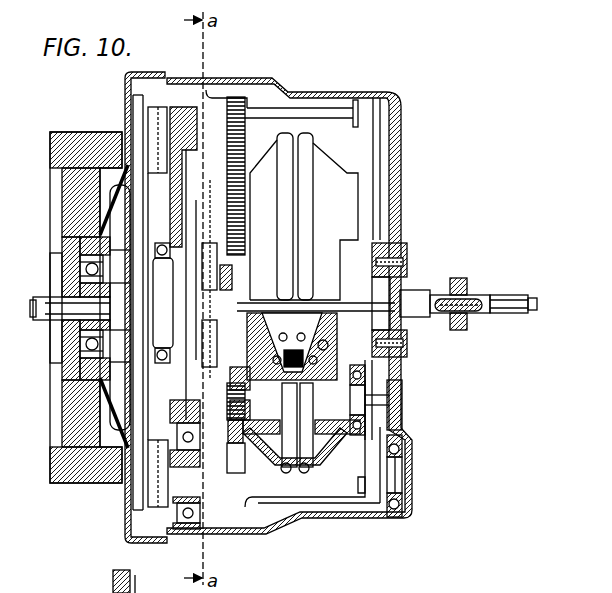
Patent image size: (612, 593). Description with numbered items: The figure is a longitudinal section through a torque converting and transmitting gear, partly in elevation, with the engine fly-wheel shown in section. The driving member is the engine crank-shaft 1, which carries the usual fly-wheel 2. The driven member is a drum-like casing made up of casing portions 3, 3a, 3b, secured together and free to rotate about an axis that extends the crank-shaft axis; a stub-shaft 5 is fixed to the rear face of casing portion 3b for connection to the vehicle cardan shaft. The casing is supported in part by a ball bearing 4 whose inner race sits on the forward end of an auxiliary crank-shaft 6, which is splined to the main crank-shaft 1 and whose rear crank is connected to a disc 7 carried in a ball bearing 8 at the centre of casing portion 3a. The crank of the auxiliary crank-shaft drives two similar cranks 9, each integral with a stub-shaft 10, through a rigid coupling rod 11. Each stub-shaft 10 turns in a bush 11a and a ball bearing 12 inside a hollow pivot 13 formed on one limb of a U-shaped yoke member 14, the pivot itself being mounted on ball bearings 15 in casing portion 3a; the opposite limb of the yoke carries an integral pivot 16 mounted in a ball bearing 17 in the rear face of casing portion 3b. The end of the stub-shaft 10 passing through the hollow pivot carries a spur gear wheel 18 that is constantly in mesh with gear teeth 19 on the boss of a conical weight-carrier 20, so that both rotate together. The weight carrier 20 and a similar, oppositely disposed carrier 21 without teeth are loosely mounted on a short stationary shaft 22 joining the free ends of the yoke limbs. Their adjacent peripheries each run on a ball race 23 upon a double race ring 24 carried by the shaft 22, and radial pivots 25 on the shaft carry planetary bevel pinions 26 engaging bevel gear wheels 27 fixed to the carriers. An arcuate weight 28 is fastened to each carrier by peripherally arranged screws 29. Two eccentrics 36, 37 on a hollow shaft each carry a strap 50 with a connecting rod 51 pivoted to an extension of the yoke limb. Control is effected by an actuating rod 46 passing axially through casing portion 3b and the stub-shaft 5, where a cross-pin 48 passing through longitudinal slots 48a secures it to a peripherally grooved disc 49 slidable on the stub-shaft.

The engine crank-shaft 1 is at (33, 306).
The fly-wheel 2 is at (62, 132).
The casing portion 3 is at (125, 80).
The casing portion 3a is at (178, 76).
The casing portion 3b is at (366, 90).
The ball bearing 4 is at (90, 268).
The stub-shaft 5 is at (436, 322).
The auxiliary crank-shaft 6 is at (72, 325).
The disc 7 is at (100, 393).
The ball bearing 8 is at (157, 247).
The crank 9 is at (128, 100).
The stub-shaft 10 is at (172, 498).
The rigid coupling rod 11 is at (133, 207).
The bush 11a is at (170, 460).
The ball bearing 12 is at (214, 527).
The hollow pivot 13 is at (187, 505).
The U-shaped yoke member 14 is at (330, 107).
The ball bearings 15 is at (177, 437).
The integral pivot 16 is at (410, 486).
The ball bearing 17 is at (410, 450).
The spur gear wheel 18 is at (238, 97).
The gear teeth 19 is at (237, 360).
The conical weight-carrier 20 is at (286, 140).
The weight carrier 21 is at (310, 137).
The stationary shaft 22 is at (372, 407).
The ball race 23 is at (288, 473).
The double race ring 24 is at (300, 447).
The radial pivots 25 is at (337, 357).
The planetary bevel pinions 26 is at (372, 395).
The bevel gear wheels 27 is at (410, 439).
The arcuate weight 28 is at (267, 227).
The screws 29 is at (334, 310).
The eccentric 36 is at (178, 285).
The eccentric 37 is at (248, 248).
The actuating rod 46 is at (378, 300).
The cross-pin 48 is at (463, 300).
The longitudinal slots 48a is at (473, 307).
The peripherally grooved disc 49 is at (461, 278).
The strap 50 is at (200, 372).
The connecting rod 51 is at (190, 203).